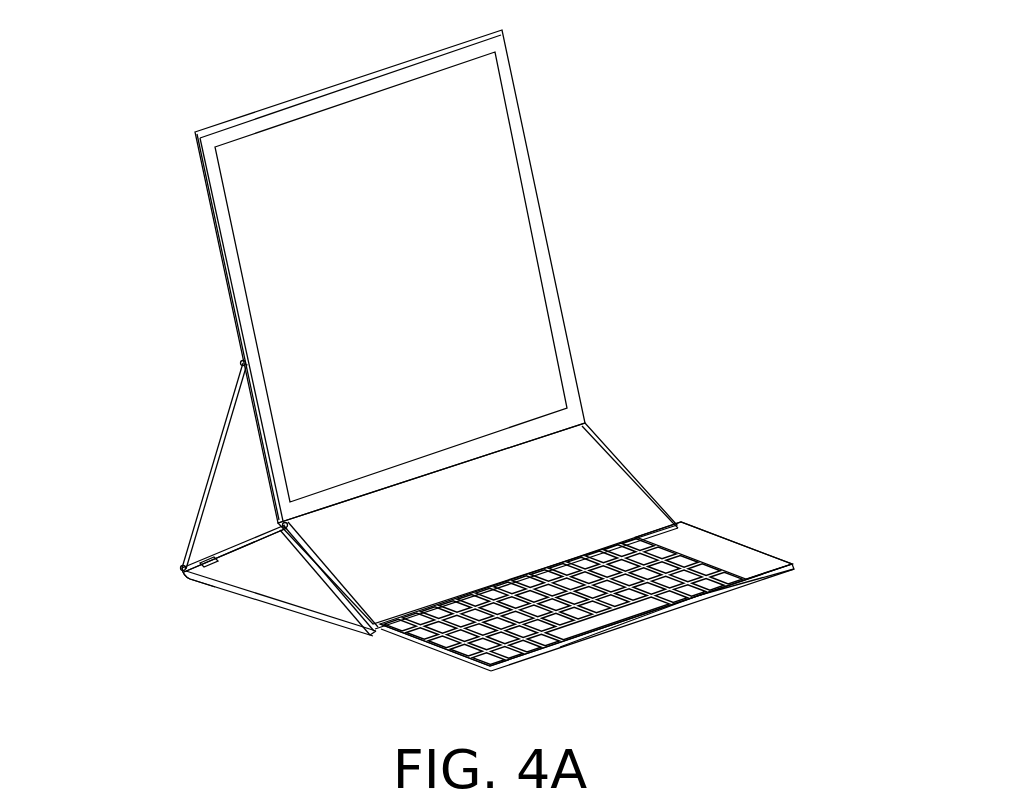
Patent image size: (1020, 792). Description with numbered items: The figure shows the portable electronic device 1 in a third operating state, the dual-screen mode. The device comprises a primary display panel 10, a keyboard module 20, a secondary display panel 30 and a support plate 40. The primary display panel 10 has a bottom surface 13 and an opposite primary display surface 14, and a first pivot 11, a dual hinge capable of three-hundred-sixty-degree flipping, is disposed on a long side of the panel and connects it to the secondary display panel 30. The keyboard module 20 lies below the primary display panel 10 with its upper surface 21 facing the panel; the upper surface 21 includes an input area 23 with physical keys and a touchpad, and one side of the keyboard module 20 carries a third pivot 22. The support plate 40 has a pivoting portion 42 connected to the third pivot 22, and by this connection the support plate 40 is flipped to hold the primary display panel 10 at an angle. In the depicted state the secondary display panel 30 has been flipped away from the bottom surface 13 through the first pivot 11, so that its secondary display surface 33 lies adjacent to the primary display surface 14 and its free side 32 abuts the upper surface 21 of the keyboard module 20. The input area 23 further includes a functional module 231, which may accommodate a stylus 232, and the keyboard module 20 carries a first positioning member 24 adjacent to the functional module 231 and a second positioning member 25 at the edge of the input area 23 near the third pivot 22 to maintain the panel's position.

The portable electronic device 1 is at (136, 96).
The primary display panel 10 is at (518, 108).
The bottom surface 13 is at (213, 228).
The primary display surface 14 is at (532, 303).
The secondary display surface 33 is at (597, 467).
The free side 32 is at (680, 525).
The keyboard module 20 is at (713, 545).
The functional module 231 is at (700, 596).
The stylus 232 is at (633, 622).
The first positioning member 24 is at (466, 667).
The input area 23 is at (416, 652).
The second positioning member 25 is at (371, 632).
The secondary display panel 30 is at (363, 590).
The upper surface 21 is at (270, 583).
The third pivot 22 is at (213, 573).
The first pivot 11 is at (274, 533).
The support plate 40 is at (218, 438).
The pivoting portion 42 is at (180, 568).